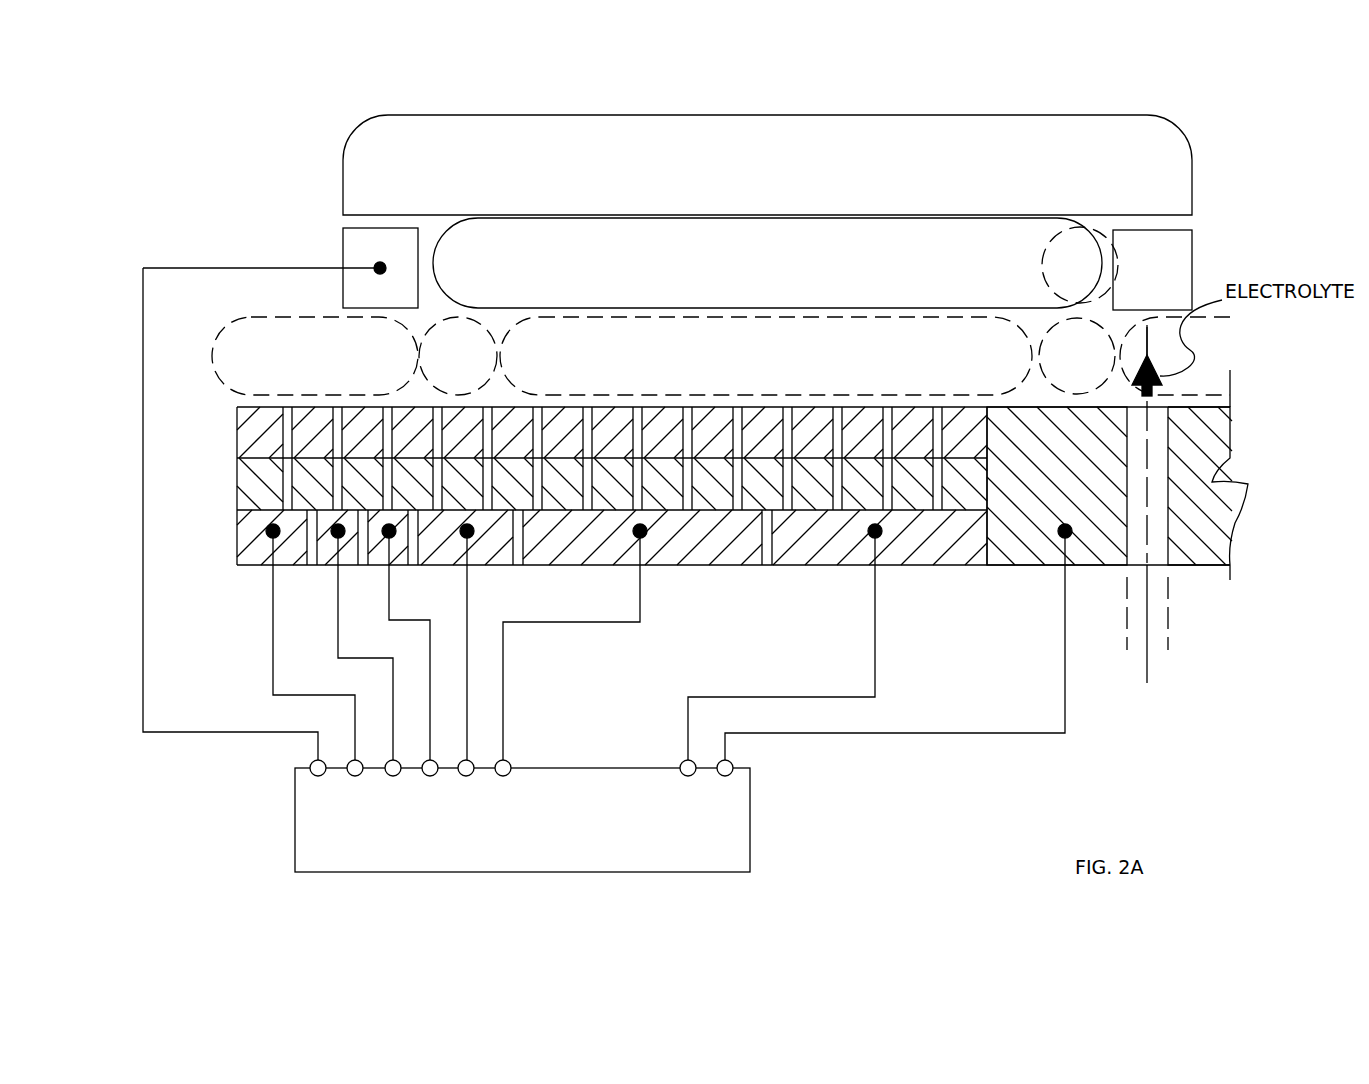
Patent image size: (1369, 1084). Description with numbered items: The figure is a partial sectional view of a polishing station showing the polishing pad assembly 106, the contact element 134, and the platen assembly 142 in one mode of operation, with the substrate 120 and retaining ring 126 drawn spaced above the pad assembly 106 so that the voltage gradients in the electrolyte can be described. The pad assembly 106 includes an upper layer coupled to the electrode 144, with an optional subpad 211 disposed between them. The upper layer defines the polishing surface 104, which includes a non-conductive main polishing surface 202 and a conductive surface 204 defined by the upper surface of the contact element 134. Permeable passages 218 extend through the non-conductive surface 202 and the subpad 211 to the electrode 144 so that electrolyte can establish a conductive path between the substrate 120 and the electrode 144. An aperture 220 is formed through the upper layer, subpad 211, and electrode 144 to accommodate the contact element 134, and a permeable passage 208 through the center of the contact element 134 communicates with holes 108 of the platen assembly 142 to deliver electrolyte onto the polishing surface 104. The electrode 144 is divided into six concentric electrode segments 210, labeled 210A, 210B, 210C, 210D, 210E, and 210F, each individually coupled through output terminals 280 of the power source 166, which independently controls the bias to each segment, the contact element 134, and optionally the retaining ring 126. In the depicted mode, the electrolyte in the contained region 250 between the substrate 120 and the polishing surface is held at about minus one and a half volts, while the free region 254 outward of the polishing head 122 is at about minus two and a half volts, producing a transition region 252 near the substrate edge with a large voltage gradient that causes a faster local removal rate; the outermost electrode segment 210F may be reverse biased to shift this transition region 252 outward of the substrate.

The polishing surface 104 is at (242, 390).
The polishing pad assembly 106 is at (136, 398).
The holes of the platen assembly 108 is at (1168, 604).
The substrate 120 is at (707, 272).
The polishing head 122 is at (722, 159).
The retaining ring 126 is at (343, 250).
The contact element 134 is at (1073, 479).
The platen assembly 142 is at (623, 688).
The electrode 144 is at (237, 545).
The power source 166 is at (538, 850).
The non-conductive main polishing surface 202 is at (264, 385).
The conductive surface 204 is at (1066, 394).
The permeable passage 208 is at (1200, 405).
The electrode segments 210 is at (237, 437).
The subpad 211 is at (237, 490).
The permeable passage 218 is at (795, 480).
The aperture 220 is at (1017, 405).
The contained region 250 is at (760, 344).
The transition region 252 is at (466, 308).
The free region 254 is at (312, 322).
The output terminals 280 is at (386, 784).
The electrode segment 210A is at (905, 568).
The electrode segment 210B is at (665, 568).
The electrode segment 210C is at (483, 568).
The electrode segment 210D is at (405, 568).
The electrode segment 210E is at (345, 568).
The outermost electrode segment 210F is at (293, 568).